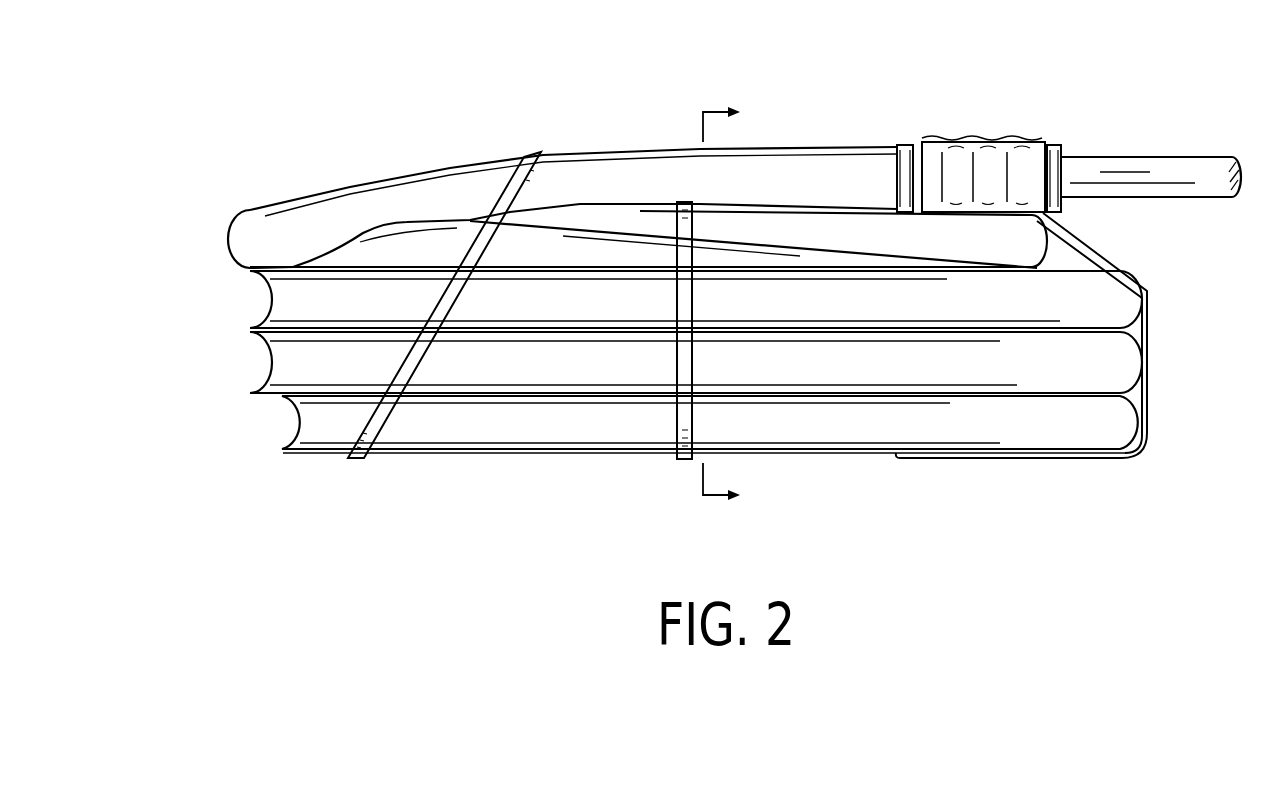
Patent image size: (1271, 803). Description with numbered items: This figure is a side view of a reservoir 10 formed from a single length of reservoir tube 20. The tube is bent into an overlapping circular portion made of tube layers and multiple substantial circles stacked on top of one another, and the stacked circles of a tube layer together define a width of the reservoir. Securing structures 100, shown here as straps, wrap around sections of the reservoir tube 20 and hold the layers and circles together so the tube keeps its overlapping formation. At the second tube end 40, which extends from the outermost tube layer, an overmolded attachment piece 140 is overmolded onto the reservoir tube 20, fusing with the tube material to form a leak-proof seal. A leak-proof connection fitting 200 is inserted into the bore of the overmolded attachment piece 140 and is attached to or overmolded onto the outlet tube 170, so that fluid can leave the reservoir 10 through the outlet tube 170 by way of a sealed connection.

The reservoir 10 is at (708, 319).
The reservoir tube 20 is at (700, 370).
The second tube end 40 is at (981, 116).
The securing structure 100 is at (904, 150).
The overmolded attachment piece 140 is at (985, 160).
The outlet tube 170 is at (1177, 205).
The leak-proof connection fitting 200 is at (1053, 152).